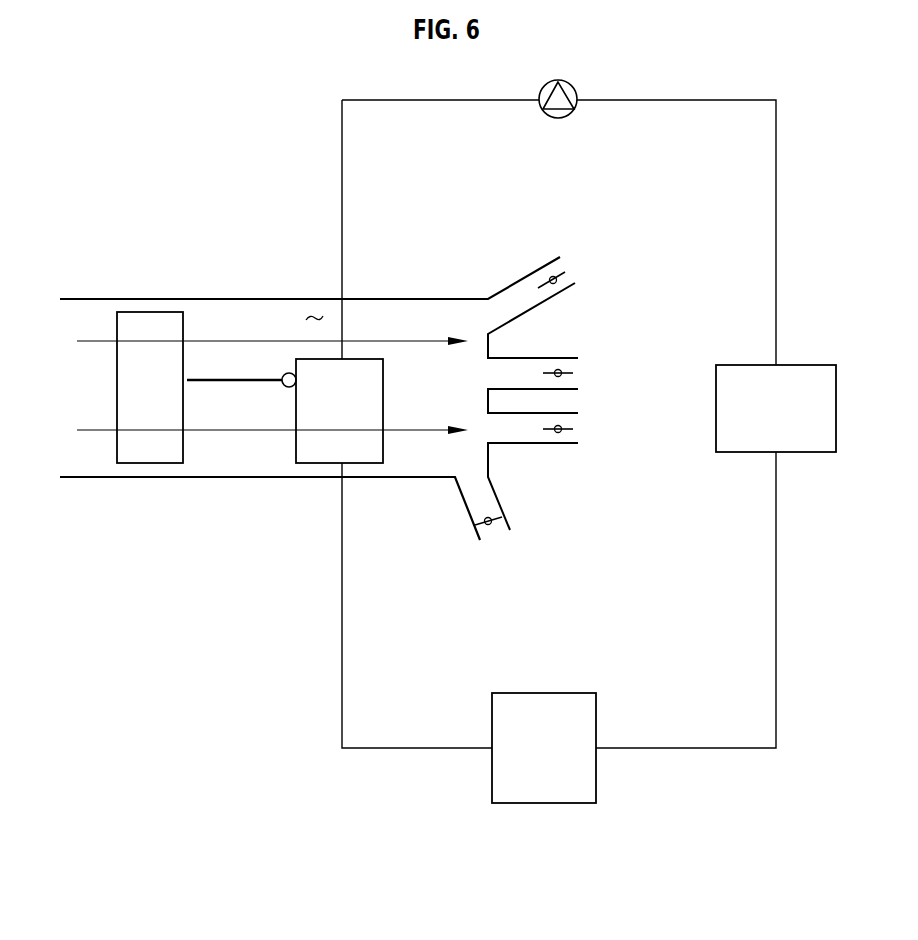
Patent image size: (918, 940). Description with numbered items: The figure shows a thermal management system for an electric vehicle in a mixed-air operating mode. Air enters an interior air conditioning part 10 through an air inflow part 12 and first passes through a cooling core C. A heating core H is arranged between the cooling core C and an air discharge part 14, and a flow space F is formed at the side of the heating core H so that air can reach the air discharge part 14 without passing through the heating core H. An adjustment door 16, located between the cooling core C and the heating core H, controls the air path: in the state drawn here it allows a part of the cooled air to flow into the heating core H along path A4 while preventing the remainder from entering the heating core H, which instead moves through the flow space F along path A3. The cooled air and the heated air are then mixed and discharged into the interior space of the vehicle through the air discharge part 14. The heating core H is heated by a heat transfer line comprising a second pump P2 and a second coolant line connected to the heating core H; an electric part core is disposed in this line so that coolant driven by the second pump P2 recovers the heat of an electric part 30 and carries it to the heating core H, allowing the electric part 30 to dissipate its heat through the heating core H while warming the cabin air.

The interior air conditioning part 10 is at (425, 288).
The air inflow part 12 is at (89, 409).
The air discharge part 14 is at (447, 384).
The adjustment door 16 is at (235, 382).
The electric part 30 is at (820, 453).
The cooling core C is at (136, 320).
The flow space F is at (315, 313).
The heating core H is at (312, 455).
The second pump P2 is at (563, 118).
The path A3 is at (272, 329).
The path A4 is at (272, 444).